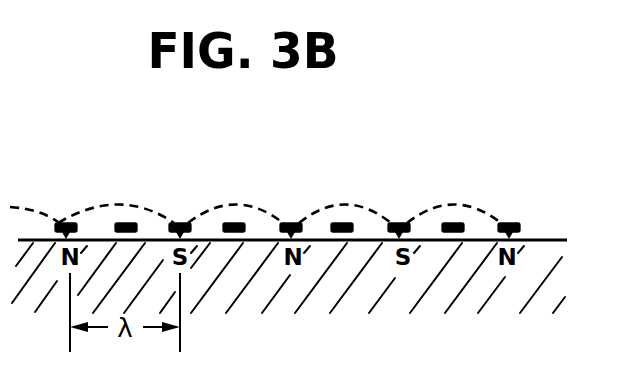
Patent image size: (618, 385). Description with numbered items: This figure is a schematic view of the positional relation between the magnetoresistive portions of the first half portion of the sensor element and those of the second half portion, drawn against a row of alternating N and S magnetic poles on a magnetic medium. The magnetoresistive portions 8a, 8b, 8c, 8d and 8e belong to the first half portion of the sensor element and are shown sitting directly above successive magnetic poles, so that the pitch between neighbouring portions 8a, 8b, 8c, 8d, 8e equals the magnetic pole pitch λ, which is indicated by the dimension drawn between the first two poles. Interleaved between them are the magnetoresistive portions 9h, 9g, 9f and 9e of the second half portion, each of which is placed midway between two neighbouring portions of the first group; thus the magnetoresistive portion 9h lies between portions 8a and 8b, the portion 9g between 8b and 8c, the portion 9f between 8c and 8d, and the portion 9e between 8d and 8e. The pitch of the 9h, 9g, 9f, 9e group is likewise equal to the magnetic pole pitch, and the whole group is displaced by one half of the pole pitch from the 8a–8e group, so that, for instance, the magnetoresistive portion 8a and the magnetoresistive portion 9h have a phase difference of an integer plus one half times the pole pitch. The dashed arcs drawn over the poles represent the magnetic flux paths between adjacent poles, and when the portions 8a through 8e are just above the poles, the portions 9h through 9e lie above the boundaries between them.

The magnetoresistive portion 8a is at (67, 222).
The magnetoresistive portion 8b is at (181, 222).
The magnetoresistive portion 8c is at (290, 222).
The magnetoresistive portion 8d is at (399, 222).
The magnetoresistive portion 8e is at (509, 222).
The magnetoresistive portion 9e is at (453, 222).
The magnetoresistive portion 9f is at (342, 222).
The magnetoresistive portion 9g is at (234, 222).
The magnetoresistive portion 9h is at (126, 222).